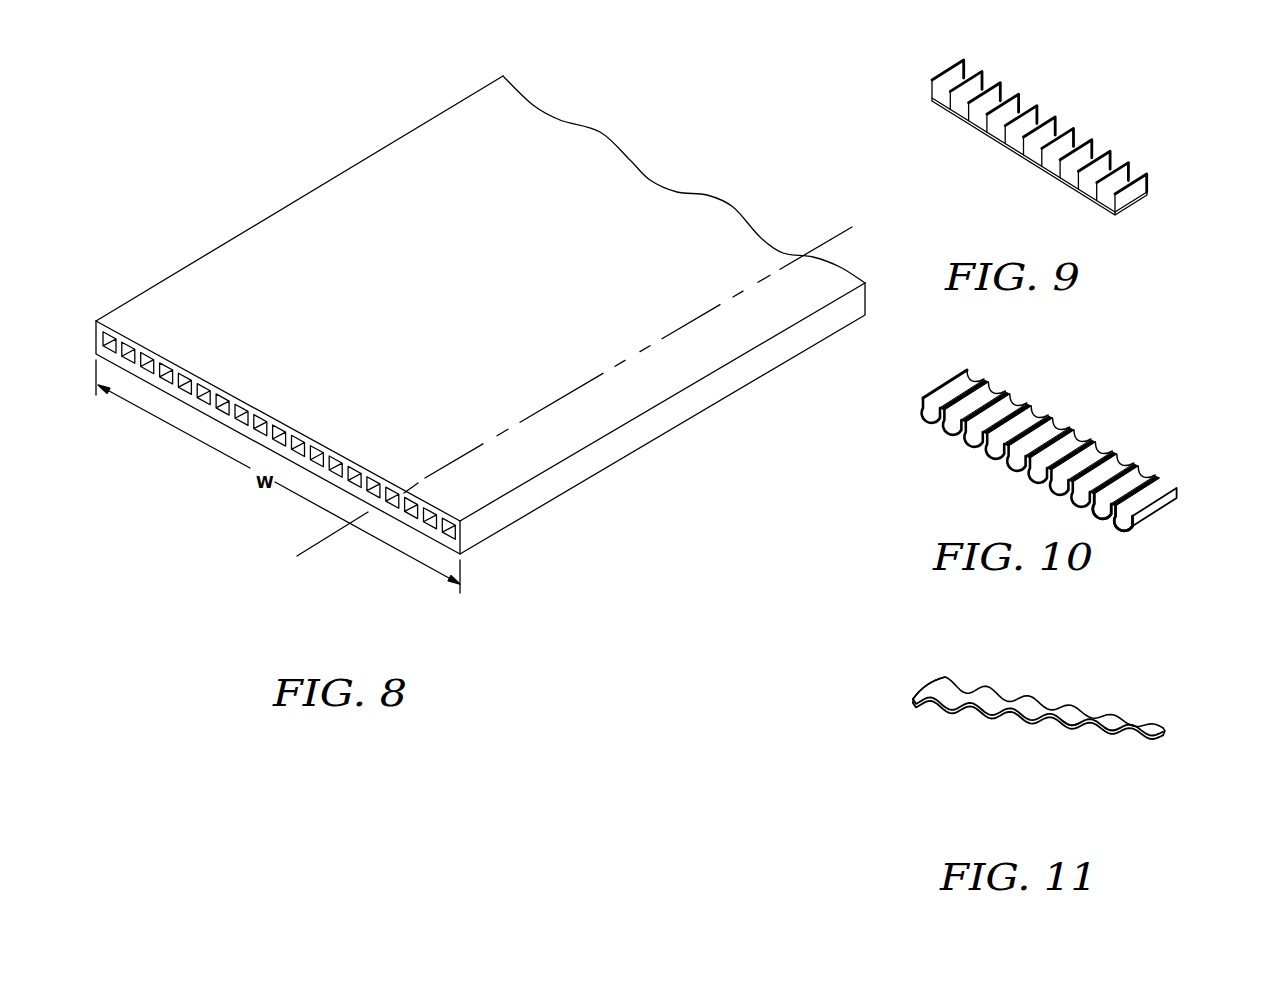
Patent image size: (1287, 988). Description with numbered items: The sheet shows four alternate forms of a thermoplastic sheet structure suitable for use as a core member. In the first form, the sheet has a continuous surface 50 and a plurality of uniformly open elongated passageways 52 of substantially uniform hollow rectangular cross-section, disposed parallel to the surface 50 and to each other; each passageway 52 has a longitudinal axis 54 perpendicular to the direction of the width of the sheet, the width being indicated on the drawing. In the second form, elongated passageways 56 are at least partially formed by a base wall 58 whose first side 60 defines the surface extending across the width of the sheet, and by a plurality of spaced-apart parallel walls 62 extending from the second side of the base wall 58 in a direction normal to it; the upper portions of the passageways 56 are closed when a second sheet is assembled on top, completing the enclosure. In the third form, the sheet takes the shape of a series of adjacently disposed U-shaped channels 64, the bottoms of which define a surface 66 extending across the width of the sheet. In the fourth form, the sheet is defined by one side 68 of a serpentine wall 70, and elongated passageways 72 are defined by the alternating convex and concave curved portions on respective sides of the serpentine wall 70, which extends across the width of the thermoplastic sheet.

In FIG. 8, the continuous surface 50 is at (508, 296).
In FIG. 8, the elongated passageways 52 is at (220, 418).
In FIG. 8, the longitudinal axis 54 is at (317, 547).
In FIG. 9, the elongated passageways 56 is at (1080, 187).
In FIG. 10, the elongated passageways 56 is at (1023, 428).
In FIG. 9, the base wall 58 is at (1003, 142).
In FIG. 9, the first side 60 is at (967, 127).
In FIG. 9, the spaced-apart parallel walls 62 is at (1005, 106).
In FIG. 10, the U-shaped channels 64 is at (1130, 487).
In FIG. 10, the surface 66 is at (1012, 465).
In FIG. 11, the one side 68 is at (972, 718).
In FIG. 11, the serpentine wall 70 is at (923, 705).
In FIG. 11, the elongated passageways 72 is at (1120, 732).